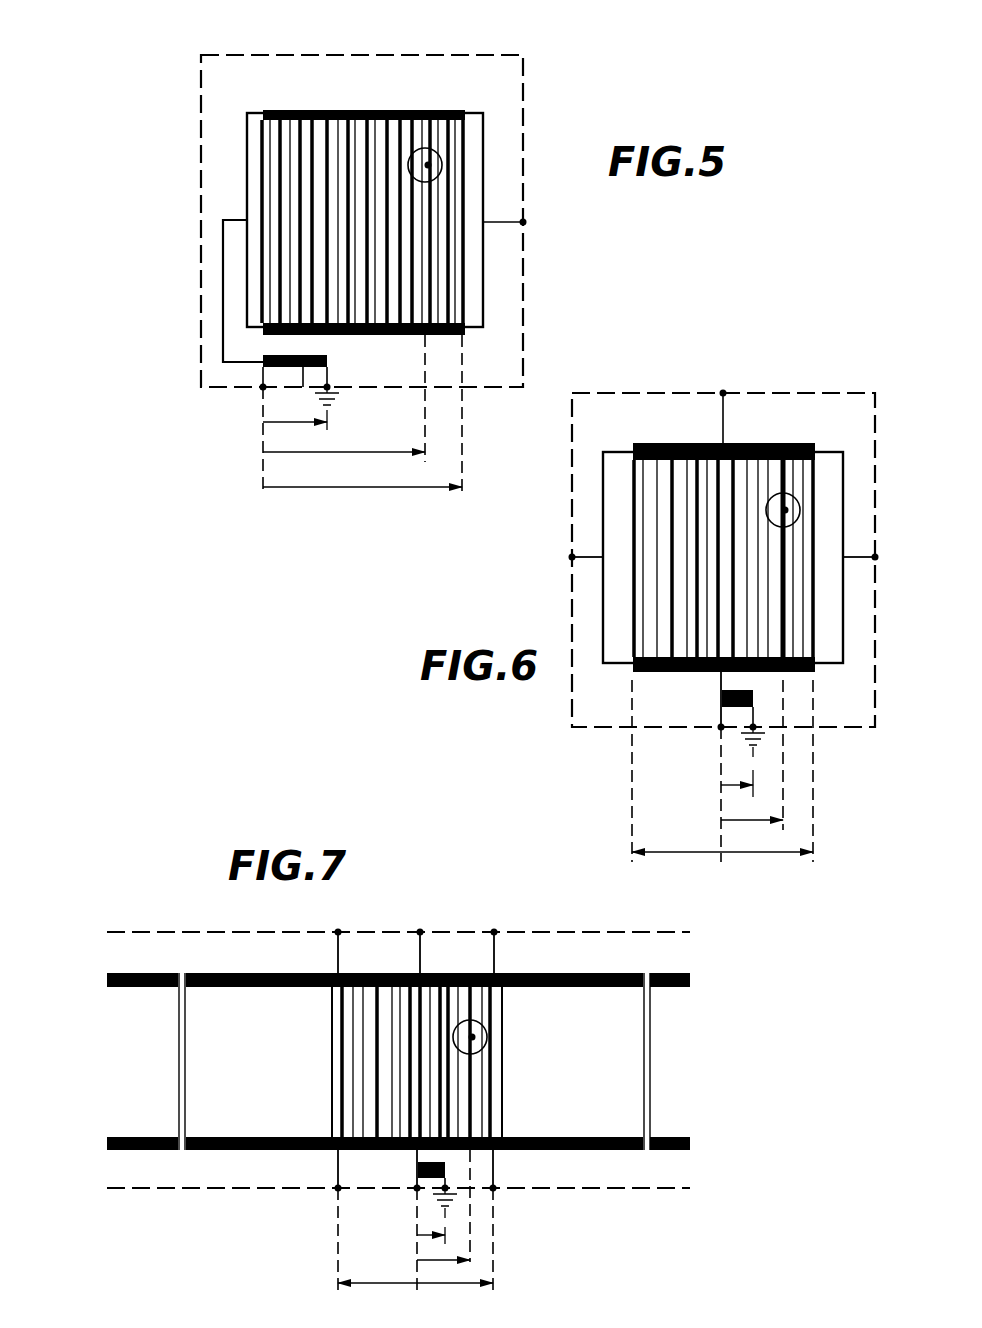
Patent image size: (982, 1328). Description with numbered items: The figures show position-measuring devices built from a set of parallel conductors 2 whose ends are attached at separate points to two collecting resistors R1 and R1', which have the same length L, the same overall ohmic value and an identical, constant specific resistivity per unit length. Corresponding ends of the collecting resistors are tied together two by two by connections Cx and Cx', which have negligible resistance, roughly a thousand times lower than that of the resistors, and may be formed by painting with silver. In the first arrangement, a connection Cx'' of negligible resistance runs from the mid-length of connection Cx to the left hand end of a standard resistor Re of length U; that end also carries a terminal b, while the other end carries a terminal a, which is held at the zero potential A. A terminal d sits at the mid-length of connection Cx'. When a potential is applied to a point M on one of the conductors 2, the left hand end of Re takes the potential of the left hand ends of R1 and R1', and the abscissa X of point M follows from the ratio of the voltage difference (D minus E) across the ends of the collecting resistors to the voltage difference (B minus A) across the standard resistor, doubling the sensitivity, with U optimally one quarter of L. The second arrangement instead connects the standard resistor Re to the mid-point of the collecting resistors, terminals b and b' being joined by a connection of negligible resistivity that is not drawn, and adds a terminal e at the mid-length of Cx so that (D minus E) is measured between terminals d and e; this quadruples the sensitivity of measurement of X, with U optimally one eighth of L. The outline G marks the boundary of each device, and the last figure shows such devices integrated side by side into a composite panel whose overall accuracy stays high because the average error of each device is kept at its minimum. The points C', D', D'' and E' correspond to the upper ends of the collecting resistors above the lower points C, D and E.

In FIG. 5, the parallel conductors 2 is at (300, 268).
In FIG. 6, the parallel conductors 2 is at (723, 557).
In FIG. 7, the parallel conductors 2 is at (398, 1061).
In FIG. 5, the housing boundary G is at (483, 55).
In FIG. 6, the housing boundary G is at (835, 393).
In FIG. 7, the housing boundary G is at (107, 960).
In FIG. 5, the point M is at (440, 160).
In FIG. 6, the point M is at (780, 493).
In FIG. 7, the point M is at (487, 1032).
In FIG. 5, the collecting resistor R1' is at (355, 58).
In FIG. 6, the collecting resistor R1' is at (622, 396).
In FIG. 5, the collecting resistor R1 is at (474, 391).
In FIG. 6, the collecting resistor R1 is at (599, 735).
In FIG. 5, the standard resistor Re is at (303, 388).
In FIG. 5, the connection Cx is at (198, 154).
In FIG. 6, the connection Cx is at (562, 522).
In FIG. 5, the connection Cx' is at (529, 164).
In FIG. 6, the connection Cx' is at (871, 508).
In FIG. 5, the connection Cx'' is at (205, 295).
In FIG. 5, the potential A is at (306, 364).
In FIG. 6, the potential A is at (748, 700).
In FIG. 7, the potential A is at (448, 1172).
In FIG. 5, the terminal a is at (327, 387).
In FIG. 6, the terminal a is at (755, 726).
In FIG. 5, the voltage B is at (236, 412).
In FIG. 6, the voltage B is at (712, 767).
In FIG. 7, the voltage B is at (409, 1222).
In FIG. 5, the terminal b is at (243, 411).
In FIG. 6, the terminal b is at (693, 747).
In FIG. 5, the terminal B' is at (195, 201).
In FIG. 6, the terminal B' is at (714, 401).
In FIG. 7, the terminal B' is at (431, 951).
In FIG. 6, the terminal b' is at (691, 412).
In FIG. 5, the position C is at (415, 398).
In FIG. 6, the position C is at (792, 753).
In FIG. 7, the position C is at (471, 1206).
In FIG. 5, the position C' is at (429, 99).
In FIG. 5, the voltage D is at (473, 415).
In FIG. 6, the voltage D is at (846, 708).
In FIG. 7, the voltage D is at (502, 1222).
In FIG. 5, the terminal d is at (523, 222).
In FIG. 6, the terminal d is at (875, 557).
In FIG. 5, the terminal D' is at (478, 99).
In FIG. 7, the terminal D' is at (505, 951).
In FIG. 5, the terminal D'' is at (505, 210).
In FIG. 5, the voltage E is at (219, 379).
In FIG. 6, the voltage E is at (586, 575).
In FIG. 7, the voltage E is at (346, 1222).
In FIG. 6, the terminal e is at (572, 557).
In FIG. 5, the terminal E' is at (252, 91).
In FIG. 7, the terminal E' is at (390, 938).
In FIG. 5, the length U is at (295, 398).
In FIG. 6, the length U is at (737, 781).
In FIG. 7, the length U is at (431, 1226).
In FIG. 5, the abscissa X is at (344, 440).
In FIG. 6, the abscissa X is at (752, 809).
In FIG. 7, the abscissa X is at (437, 1253).
In FIG. 5, the length L is at (362, 476).